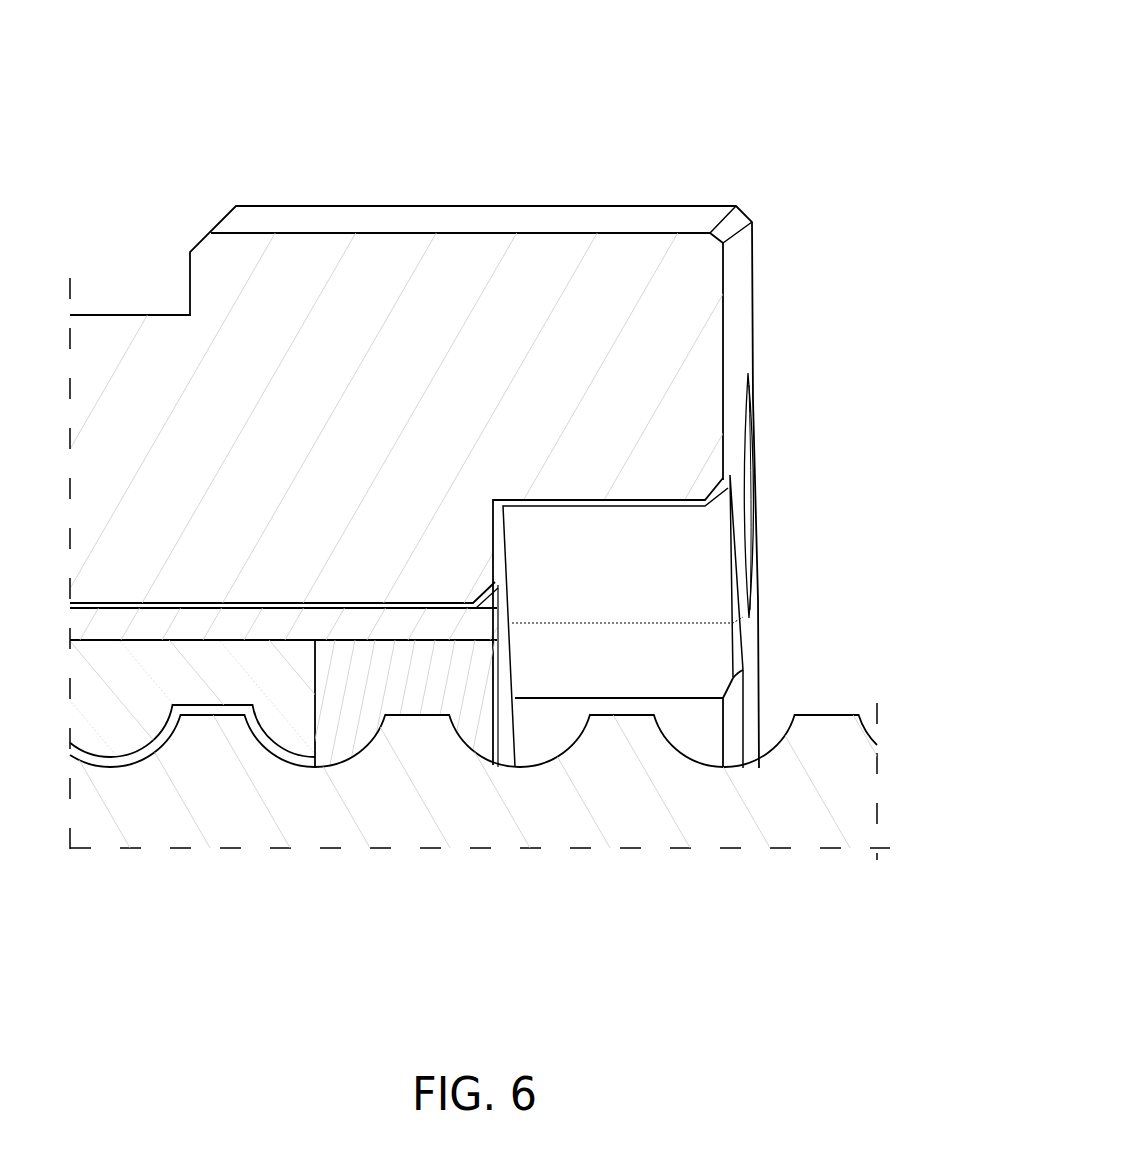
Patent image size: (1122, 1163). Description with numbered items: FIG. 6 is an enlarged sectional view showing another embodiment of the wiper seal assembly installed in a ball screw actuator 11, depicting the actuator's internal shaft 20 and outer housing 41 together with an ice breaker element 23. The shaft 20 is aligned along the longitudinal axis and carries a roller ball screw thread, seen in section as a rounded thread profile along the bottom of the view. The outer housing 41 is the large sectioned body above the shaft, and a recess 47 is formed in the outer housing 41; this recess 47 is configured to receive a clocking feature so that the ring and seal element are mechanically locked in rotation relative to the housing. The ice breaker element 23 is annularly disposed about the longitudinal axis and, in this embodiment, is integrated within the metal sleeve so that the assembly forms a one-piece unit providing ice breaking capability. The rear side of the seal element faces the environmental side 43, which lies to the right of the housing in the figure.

The ball screw actuator 11 is at (713, 66).
The shaft 20 is at (218, 807).
The ice breaker element 23 is at (400, 691).
The outer housing 41 is at (457, 262).
The environmental side 43 is at (828, 478).
The recess 47 is at (683, 578).